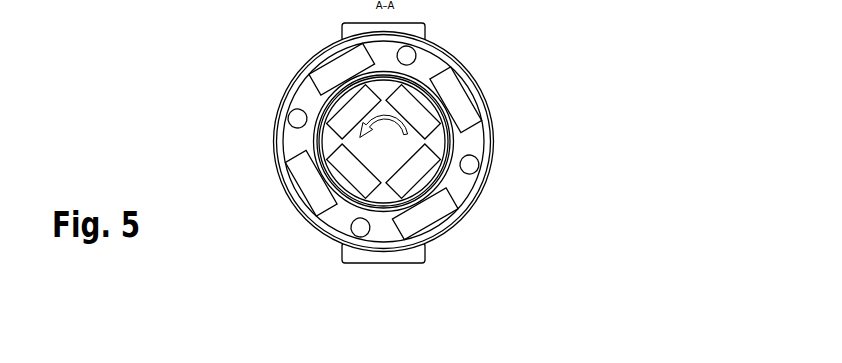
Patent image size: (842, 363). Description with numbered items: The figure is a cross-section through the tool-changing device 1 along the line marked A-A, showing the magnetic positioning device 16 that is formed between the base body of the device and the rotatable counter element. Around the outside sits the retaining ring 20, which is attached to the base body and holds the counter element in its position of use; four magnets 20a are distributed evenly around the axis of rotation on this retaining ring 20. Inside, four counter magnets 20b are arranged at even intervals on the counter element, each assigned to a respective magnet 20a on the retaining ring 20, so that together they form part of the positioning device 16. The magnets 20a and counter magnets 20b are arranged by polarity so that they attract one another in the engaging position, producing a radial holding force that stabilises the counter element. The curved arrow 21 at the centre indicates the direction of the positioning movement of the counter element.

The tool-changing device 1 is at (533, 88).
The positioning device 16 is at (301, 91).
The retaining ring 20 is at (467, 187).
The magnets 20a is at (457, 93).
The counter magnets 20b is at (417, 98).
The arrow 21 is at (395, 138).